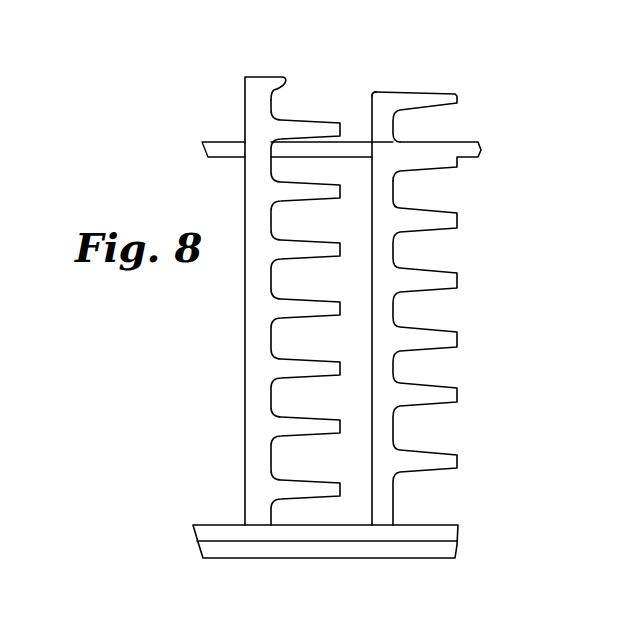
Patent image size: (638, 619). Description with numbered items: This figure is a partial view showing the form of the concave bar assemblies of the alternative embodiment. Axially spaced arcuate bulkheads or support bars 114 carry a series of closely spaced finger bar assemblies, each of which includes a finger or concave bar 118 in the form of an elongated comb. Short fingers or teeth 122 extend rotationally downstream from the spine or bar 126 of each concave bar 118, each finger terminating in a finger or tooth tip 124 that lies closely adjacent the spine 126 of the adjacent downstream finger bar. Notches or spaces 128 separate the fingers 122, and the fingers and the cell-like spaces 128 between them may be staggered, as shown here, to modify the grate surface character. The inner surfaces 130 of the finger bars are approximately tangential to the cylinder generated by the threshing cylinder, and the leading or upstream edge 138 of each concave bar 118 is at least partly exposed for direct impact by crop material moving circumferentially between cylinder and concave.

The support bar 114 is at (222, 142).
The concave bar 118 is at (431, 77).
The fingers 122 is at (444, 168).
The tooth tip 124 is at (341, 123).
The spine 126 is at (382, 100).
The notches 128 is at (437, 247).
The inner surface 130 is at (390, 160).
The leading edge 138 is at (371, 99).